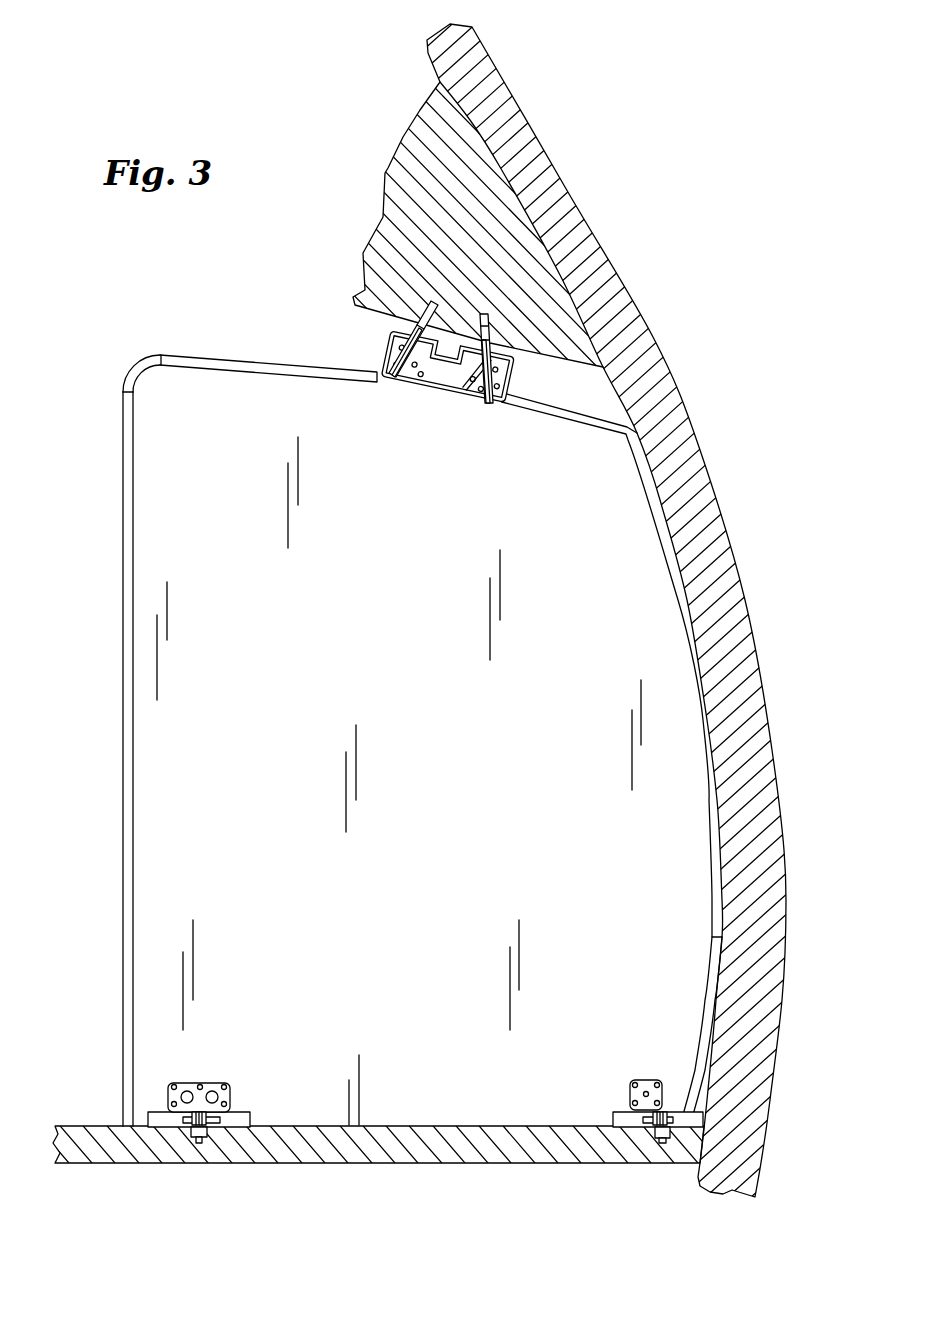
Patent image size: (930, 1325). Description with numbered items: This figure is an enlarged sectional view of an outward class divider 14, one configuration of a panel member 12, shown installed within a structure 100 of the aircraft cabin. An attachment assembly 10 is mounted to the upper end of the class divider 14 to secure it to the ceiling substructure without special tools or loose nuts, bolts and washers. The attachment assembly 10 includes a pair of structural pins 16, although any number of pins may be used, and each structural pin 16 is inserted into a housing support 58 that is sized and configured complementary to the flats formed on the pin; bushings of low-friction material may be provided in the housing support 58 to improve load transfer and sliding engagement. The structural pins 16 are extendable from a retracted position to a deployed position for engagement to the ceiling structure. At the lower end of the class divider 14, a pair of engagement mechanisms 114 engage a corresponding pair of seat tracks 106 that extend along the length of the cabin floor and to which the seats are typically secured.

The wall structure 100 is at (638, 106).
The attachment assembly 10 is at (503, 372).
The panel member 12 is at (391, 668).
The class divider 14 is at (423, 668).
The structural pin 16 is at (425, 312).
The housing support 58 is at (428, 320).
The seat track 106 is at (208, 1133).
The engagement mechanism 114 is at (187, 1083).